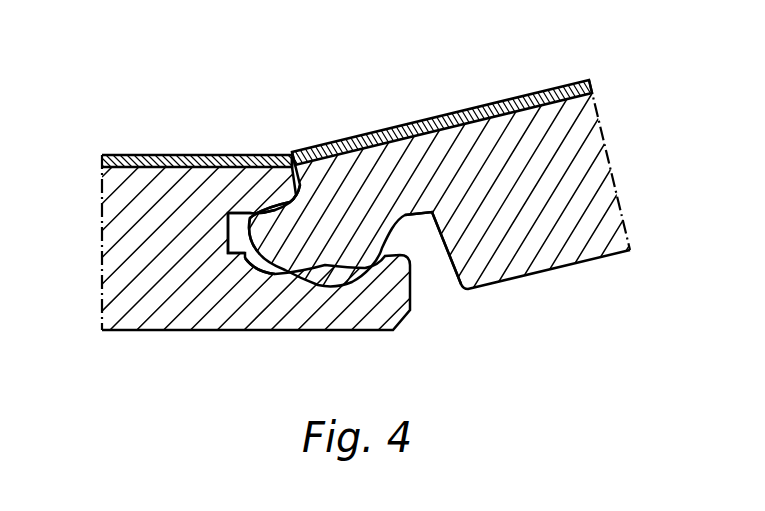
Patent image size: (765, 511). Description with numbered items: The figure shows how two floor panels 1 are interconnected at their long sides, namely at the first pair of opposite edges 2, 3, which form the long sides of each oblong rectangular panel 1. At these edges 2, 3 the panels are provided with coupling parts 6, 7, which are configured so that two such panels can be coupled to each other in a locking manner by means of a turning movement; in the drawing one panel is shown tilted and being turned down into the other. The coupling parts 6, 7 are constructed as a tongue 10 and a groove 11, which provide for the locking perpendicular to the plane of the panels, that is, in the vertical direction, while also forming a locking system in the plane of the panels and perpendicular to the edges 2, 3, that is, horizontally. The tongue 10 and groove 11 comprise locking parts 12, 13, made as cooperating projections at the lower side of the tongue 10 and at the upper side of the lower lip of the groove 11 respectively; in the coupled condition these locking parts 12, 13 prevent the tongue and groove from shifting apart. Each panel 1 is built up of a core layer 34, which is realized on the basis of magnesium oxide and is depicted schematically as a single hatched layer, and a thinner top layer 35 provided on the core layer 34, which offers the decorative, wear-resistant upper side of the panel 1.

The panel 1 is at (332, 197).
The first opposite edge 2 is at (439, 190).
The first opposite edge 3 is at (222, 242).
The coupling part 6 is at (418, 234).
The coupling part 7 is at (234, 262).
The tongue 10 is at (250, 235).
The groove 11 is at (240, 221).
The locking part 12 is at (370, 247).
The locking part 13 is at (378, 260).
The core layer 34 is at (547, 217).
The top layer 35 is at (437, 118).